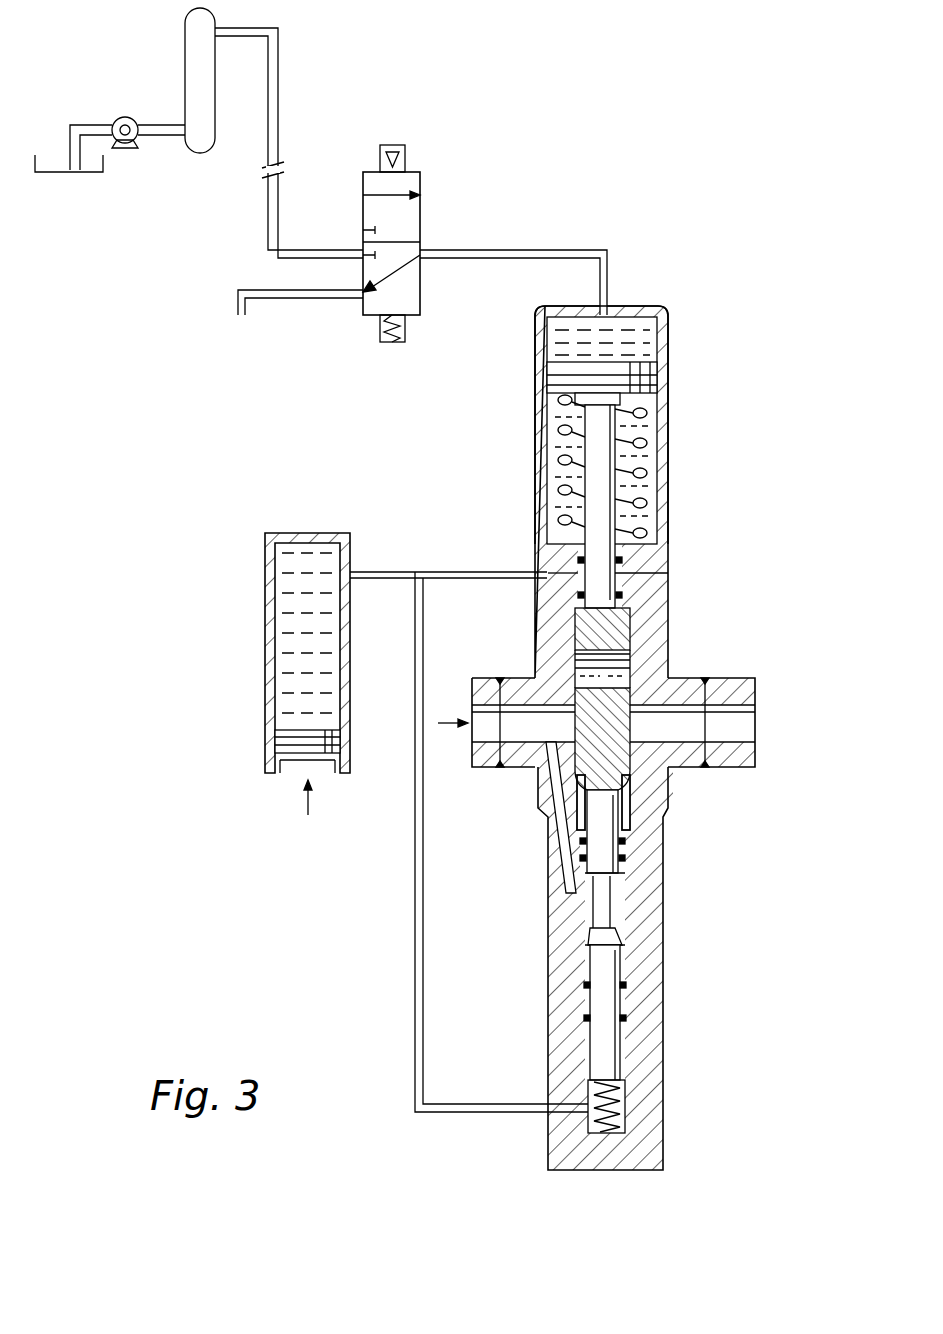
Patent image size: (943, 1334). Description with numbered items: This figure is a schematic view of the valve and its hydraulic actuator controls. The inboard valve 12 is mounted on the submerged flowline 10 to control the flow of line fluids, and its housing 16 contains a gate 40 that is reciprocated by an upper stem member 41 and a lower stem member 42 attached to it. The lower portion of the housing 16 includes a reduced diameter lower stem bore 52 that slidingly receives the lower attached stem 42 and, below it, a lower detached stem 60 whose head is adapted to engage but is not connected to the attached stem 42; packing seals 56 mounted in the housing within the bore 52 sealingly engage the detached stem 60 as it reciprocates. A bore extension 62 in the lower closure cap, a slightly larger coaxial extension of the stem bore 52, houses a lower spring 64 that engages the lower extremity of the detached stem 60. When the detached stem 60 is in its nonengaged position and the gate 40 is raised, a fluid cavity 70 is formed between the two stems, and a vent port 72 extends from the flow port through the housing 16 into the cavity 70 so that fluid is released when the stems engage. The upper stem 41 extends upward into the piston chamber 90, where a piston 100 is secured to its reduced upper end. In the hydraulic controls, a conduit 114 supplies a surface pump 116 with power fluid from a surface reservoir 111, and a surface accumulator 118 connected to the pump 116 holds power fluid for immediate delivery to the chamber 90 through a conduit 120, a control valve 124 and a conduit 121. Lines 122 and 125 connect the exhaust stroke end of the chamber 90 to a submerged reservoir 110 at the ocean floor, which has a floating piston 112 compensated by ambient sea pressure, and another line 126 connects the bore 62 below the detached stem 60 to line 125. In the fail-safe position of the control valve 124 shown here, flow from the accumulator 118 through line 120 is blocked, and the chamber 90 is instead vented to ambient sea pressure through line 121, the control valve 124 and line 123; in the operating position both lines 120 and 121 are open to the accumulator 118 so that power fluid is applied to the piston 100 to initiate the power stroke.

The flowline 10 is at (750, 676).
The inboard valve 12 is at (653, 288).
The valve housing 16 is at (668, 318).
The gate 40 is at (628, 630).
The upper stem member 41 is at (612, 458).
The lower stem member 42 is at (612, 850).
The lower stem bore 52 is at (620, 915).
The packing seals 56 is at (628, 985).
The lower detached stem 60 is at (612, 1020).
The bore extension 62 is at (620, 1125).
The lower spring 64 is at (620, 1105).
The fluid cavity 70 is at (598, 905).
The vent port 72 is at (572, 856).
The piston chamber 90 is at (650, 427).
The piston 100 is at (657, 368).
The hydraulic fluid reservoir 110 is at (308, 533).
The reservoir 111 is at (110, 166).
The floating piston 112 is at (322, 740).
The conduit 114 is at (70, 128).
The pump 116 is at (122, 117).
The accumulator 118 is at (185, 42).
The conduit 120 is at (278, 86).
The conduit 121 is at (512, 249).
The line 122 is at (465, 585).
The line 123 is at (238, 292).
The control valve 124 is at (420, 178).
The line 125 is at (388, 572).
The conduit 126 is at (417, 932).